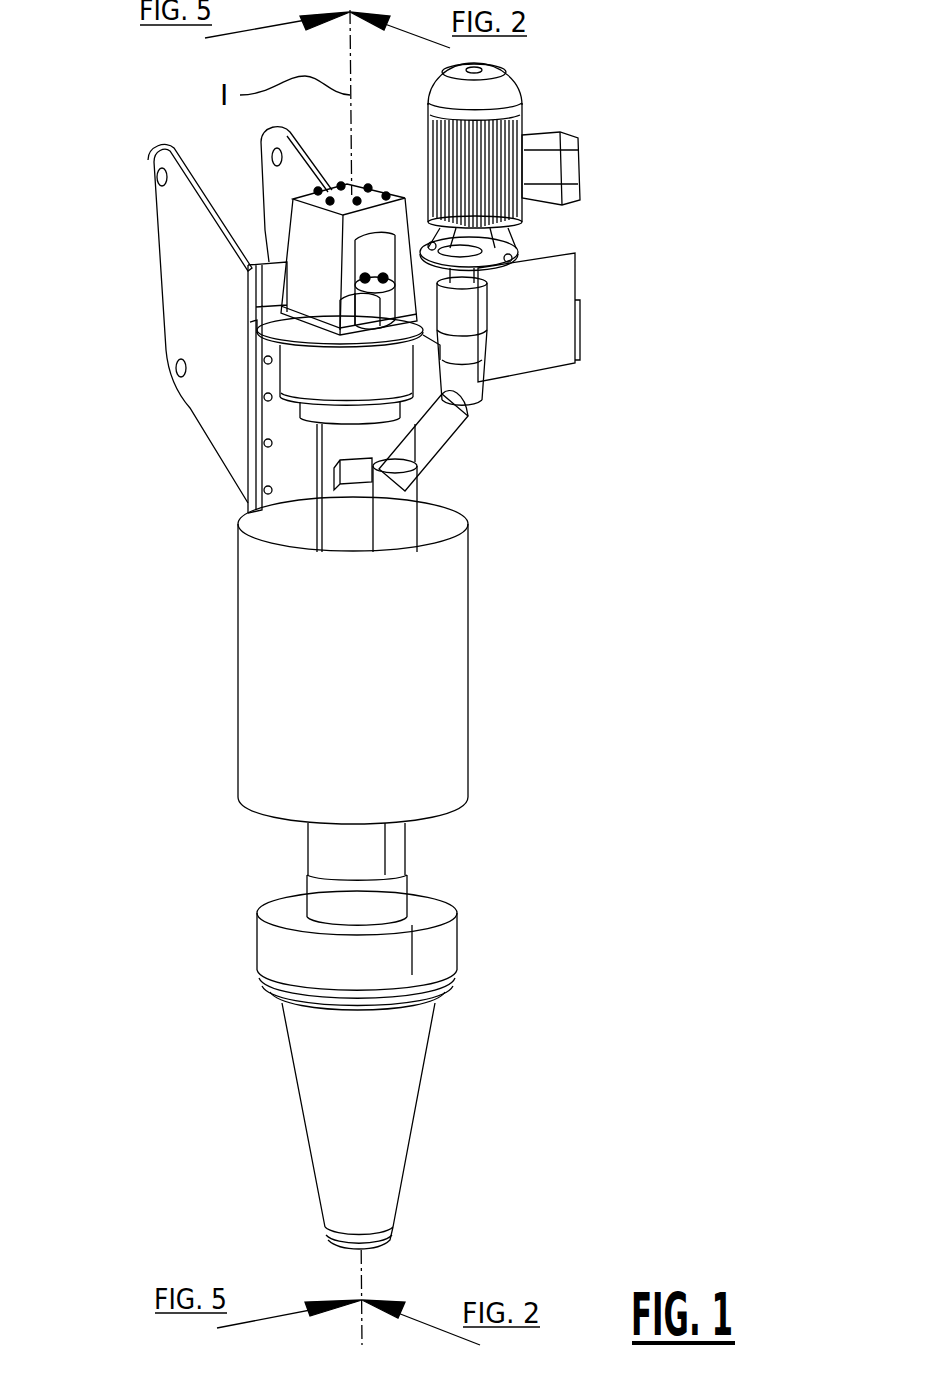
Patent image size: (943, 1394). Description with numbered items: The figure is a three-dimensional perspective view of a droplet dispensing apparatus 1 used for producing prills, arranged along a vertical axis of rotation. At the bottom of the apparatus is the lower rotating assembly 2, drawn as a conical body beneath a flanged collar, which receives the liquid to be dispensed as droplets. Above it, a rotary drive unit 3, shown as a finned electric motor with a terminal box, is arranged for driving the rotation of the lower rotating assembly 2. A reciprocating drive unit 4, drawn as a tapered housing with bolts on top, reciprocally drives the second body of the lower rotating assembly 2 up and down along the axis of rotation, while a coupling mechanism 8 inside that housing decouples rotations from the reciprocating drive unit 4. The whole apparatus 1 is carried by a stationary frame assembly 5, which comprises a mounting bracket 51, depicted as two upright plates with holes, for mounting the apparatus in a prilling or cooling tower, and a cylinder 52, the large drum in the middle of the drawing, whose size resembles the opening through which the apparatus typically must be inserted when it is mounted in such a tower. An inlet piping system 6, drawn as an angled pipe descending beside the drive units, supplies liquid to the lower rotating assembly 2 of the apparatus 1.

The droplet dispensing apparatus 1 is at (735, 110).
The lower rotating assembly 2 is at (490, 1108).
The rotary drive unit 3 is at (630, 217).
The reciprocating drive unit 4 is at (395, 232).
The stationary frame assembly 5 is at (264, 475).
The mounting bracket 51 is at (212, 422).
The cylinder 52 is at (250, 697).
The inlet piping system 6 is at (443, 407).
The coupling mechanism 8 is at (320, 305).